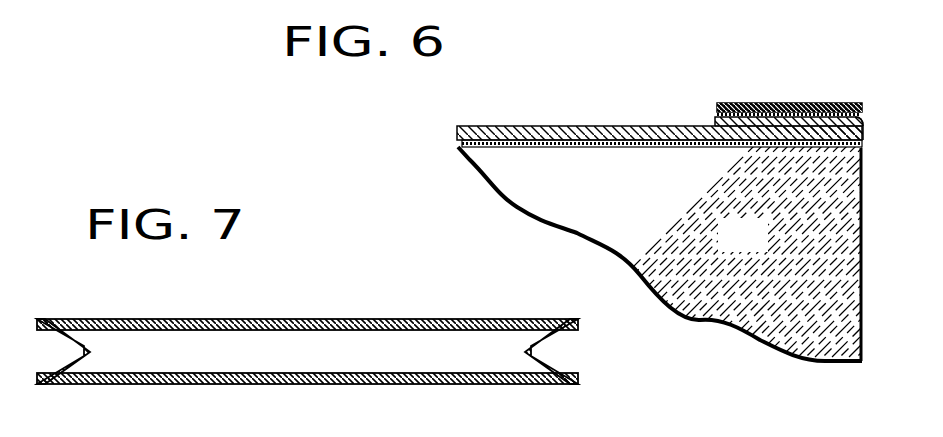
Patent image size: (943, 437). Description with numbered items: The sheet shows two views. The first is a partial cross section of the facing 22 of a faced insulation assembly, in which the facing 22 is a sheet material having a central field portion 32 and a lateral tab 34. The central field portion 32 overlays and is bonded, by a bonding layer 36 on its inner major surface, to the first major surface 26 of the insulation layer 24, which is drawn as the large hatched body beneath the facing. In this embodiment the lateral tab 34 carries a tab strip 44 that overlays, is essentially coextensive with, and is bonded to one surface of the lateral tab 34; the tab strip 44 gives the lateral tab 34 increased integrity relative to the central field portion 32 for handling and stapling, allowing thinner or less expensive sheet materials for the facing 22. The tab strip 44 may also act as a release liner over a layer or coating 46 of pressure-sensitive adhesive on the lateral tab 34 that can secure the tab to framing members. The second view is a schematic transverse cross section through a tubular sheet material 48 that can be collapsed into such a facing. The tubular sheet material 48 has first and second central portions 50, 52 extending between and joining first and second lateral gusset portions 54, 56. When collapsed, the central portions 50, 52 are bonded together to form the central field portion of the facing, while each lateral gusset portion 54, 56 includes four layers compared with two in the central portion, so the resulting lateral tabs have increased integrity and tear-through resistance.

In FIG. 6, the facing 22 is at (648, 86).
In FIG. 6, the insulation layer 24 is at (766, 248).
In FIG. 6, the first major surface 26 is at (588, 160).
In FIG. 6, the central field portion 32 is at (613, 126).
In FIG. 6, the lateral tab 34 is at (864, 122).
In FIG. 6, the bonding layer 36 is at (528, 103).
In FIG. 6, the tab strip 44 is at (790, 103).
In FIG. 6, the pressure-sensitive adhesive layer 46 is at (753, 112).
In FIG. 7, the tubular sheet material 48 is at (352, 293).
In FIG. 7, the first central portion 50 is at (276, 318).
In FIG. 7, the second central portion 52 is at (383, 385).
In FIG. 7, the first lateral gusset portion 54 is at (90, 283).
In FIG. 7, the second lateral gusset portion 56 is at (568, 318).